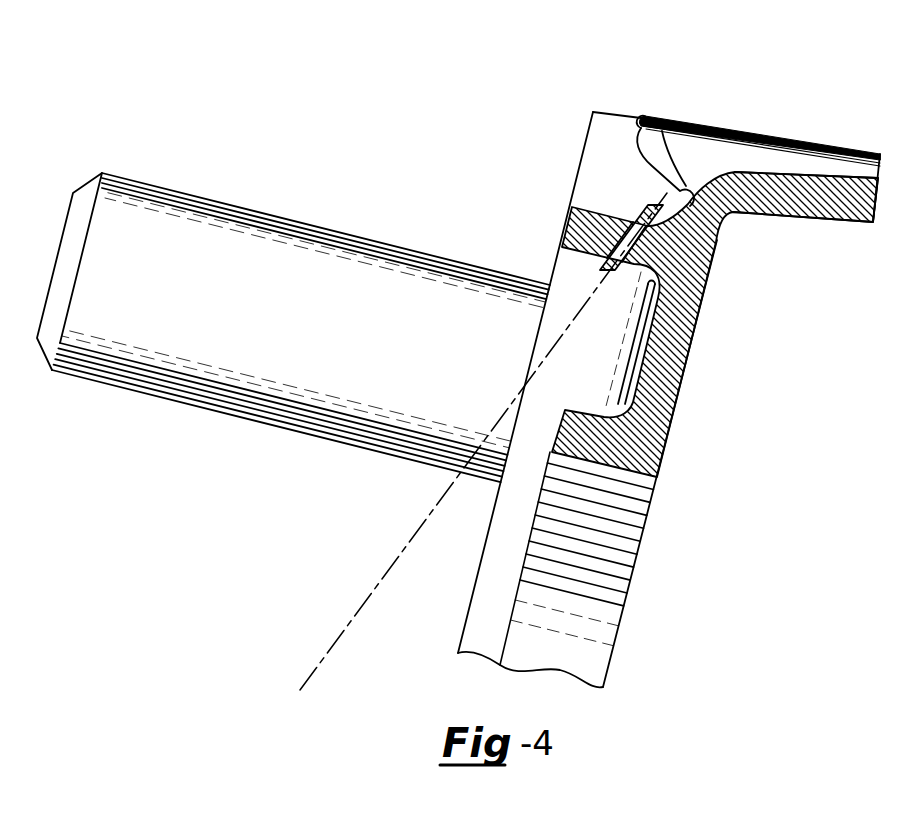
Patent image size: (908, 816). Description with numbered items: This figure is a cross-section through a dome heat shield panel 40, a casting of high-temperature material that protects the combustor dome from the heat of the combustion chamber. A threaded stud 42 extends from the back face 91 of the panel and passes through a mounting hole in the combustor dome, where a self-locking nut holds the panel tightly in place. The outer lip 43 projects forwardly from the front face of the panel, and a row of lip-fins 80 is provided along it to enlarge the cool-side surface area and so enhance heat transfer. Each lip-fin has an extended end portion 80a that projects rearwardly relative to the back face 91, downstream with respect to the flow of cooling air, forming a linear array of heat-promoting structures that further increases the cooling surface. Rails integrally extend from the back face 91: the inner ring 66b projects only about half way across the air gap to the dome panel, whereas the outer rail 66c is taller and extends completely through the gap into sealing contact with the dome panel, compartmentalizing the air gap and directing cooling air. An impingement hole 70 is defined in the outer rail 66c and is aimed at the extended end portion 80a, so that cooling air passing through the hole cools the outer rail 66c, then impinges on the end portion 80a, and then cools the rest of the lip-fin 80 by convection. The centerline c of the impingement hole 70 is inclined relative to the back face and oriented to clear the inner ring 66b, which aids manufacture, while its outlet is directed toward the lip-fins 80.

The dome heat shield panel 40 is at (750, 58).
The threaded stud 42 is at (182, 237).
The outer lip 43 is at (833, 211).
The inner ring 66b is at (590, 437).
The outer rail 66c is at (663, 253).
The impingement hole 70 is at (655, 233).
The lip-fin 80 is at (727, 137).
The extended end portion 80a is at (716, 120).
The back face 91 is at (650, 346).
The impingement passage centerline c is at (363, 603).